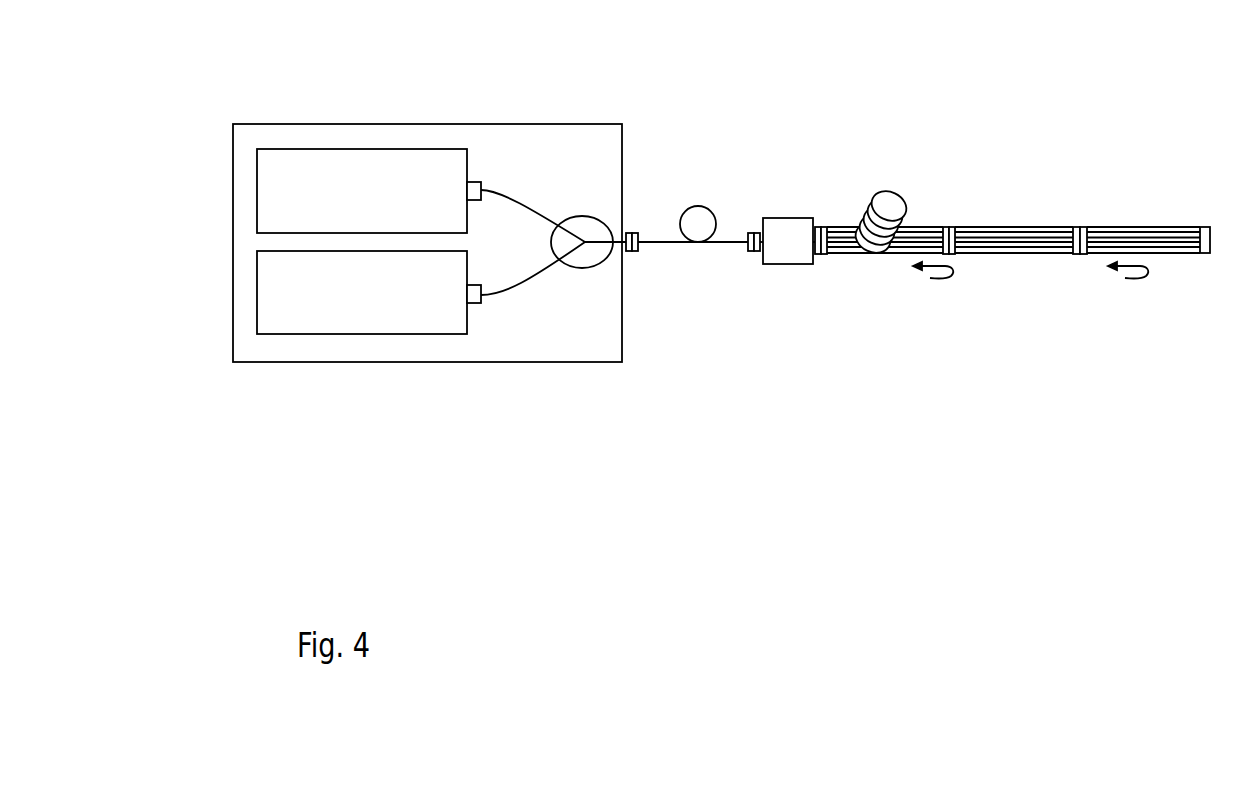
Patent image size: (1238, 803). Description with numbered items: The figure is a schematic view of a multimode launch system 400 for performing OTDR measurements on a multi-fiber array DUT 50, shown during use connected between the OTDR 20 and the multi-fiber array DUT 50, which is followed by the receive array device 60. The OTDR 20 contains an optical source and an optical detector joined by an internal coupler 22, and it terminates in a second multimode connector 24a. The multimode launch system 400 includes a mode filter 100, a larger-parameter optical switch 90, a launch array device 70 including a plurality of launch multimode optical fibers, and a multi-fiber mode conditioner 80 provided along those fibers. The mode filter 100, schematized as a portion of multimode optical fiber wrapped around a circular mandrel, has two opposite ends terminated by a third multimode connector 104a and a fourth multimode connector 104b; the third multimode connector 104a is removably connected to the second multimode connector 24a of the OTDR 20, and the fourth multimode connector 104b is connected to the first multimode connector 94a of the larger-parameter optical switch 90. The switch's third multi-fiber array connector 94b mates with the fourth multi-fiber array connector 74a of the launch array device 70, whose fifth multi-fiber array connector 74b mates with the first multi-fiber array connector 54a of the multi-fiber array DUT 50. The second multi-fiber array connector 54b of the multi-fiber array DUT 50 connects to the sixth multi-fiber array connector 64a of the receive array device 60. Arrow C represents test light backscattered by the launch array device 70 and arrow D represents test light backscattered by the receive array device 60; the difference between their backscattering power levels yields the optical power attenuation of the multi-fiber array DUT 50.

The OTDR 20 is at (423, 124).
The internal coupler 22 is at (583, 268).
The second multimode connector 24a is at (628, 252).
The third multimode connector 104a is at (635, 233).
The fourth multimode connector 104b is at (752, 232).
The mode filter 100 is at (633, 289).
The first multimode connector 94a is at (763, 222).
The third multi-fiber array connector 94b is at (813, 218).
The larger-parameter optical switch 90 is at (755, 294).
The fourth multi-fiber array connector 74a is at (823, 227).
The fifth multi-fiber array connector 74b is at (945, 227).
The launch array device 70 is at (820, 294).
The multi-fiber mode conditioner 80 is at (888, 190).
The first multi-fiber array connector 54a is at (955, 227).
The second multi-fiber array connector 54b is at (1075, 227).
The multi-fiber array DUT 50 is at (950, 294).
The sixth multi-fiber array connector 64a is at (1083, 227).
The receive array device 60 is at (1080, 294).
The multimode launch system 400 is at (633, 352).